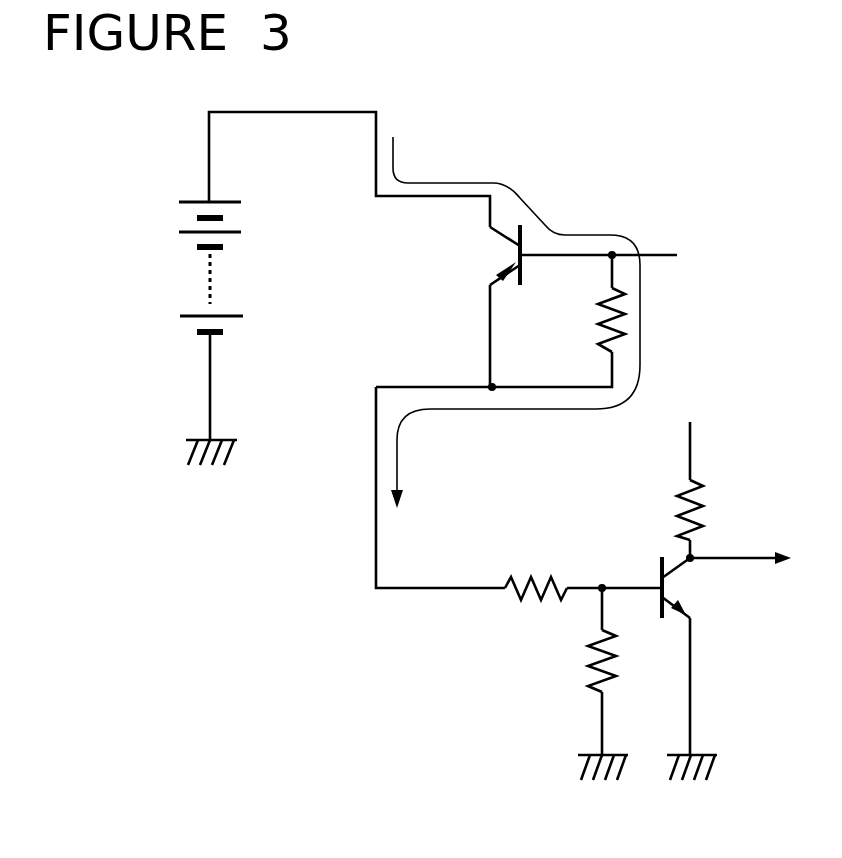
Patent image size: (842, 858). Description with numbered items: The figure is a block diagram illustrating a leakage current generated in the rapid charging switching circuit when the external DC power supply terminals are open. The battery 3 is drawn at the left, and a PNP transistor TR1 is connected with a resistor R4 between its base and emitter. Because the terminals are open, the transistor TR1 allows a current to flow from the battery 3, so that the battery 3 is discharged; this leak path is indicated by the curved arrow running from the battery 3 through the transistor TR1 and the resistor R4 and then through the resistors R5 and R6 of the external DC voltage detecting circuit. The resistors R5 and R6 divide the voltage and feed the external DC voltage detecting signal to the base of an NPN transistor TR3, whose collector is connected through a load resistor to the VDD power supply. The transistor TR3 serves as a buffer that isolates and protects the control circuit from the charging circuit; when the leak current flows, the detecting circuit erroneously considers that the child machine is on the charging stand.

The battery 3 is at (196, 232).
The PNP transistor TR1 is at (484, 255).
The NPN transistor TR3 is at (701, 587).
The resistor R4 is at (591, 320).
The resistor R5 is at (536, 572).
The resistor R6 is at (583, 661).
The power supply VDD is at (694, 464).